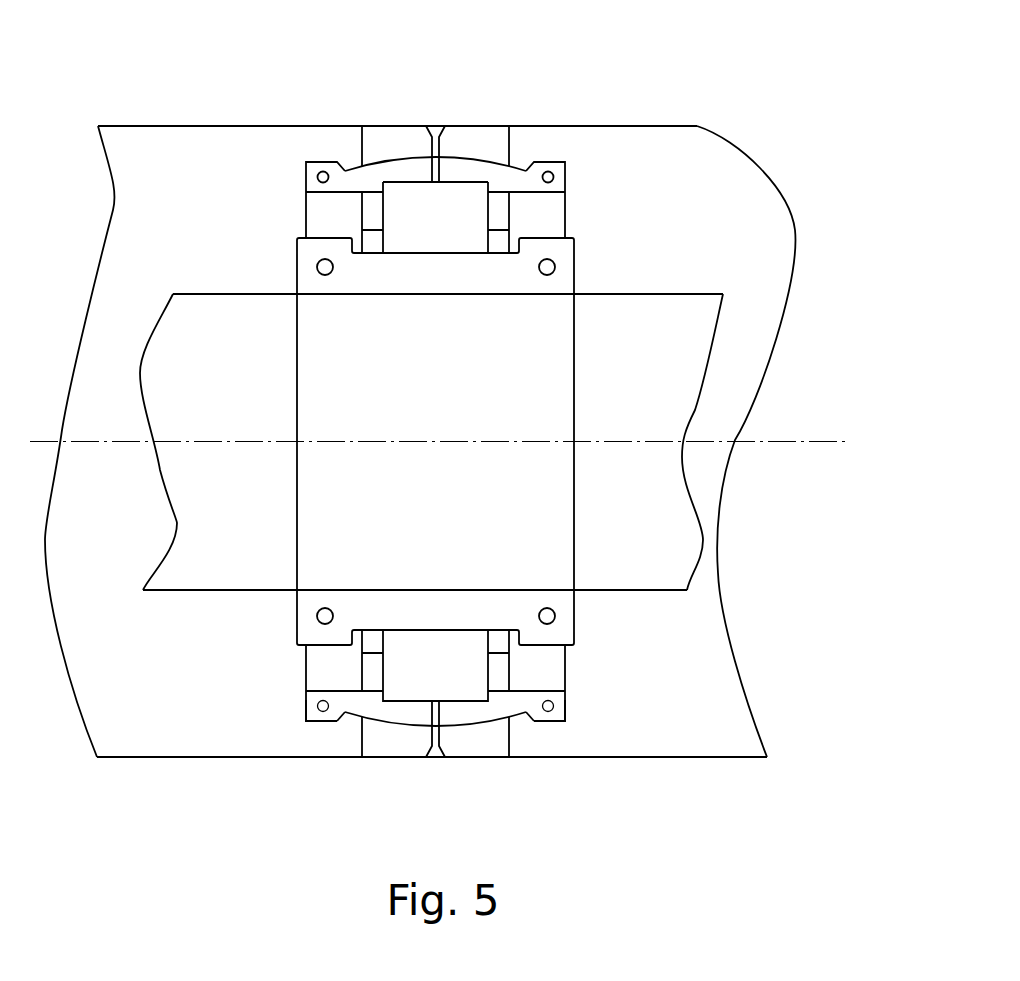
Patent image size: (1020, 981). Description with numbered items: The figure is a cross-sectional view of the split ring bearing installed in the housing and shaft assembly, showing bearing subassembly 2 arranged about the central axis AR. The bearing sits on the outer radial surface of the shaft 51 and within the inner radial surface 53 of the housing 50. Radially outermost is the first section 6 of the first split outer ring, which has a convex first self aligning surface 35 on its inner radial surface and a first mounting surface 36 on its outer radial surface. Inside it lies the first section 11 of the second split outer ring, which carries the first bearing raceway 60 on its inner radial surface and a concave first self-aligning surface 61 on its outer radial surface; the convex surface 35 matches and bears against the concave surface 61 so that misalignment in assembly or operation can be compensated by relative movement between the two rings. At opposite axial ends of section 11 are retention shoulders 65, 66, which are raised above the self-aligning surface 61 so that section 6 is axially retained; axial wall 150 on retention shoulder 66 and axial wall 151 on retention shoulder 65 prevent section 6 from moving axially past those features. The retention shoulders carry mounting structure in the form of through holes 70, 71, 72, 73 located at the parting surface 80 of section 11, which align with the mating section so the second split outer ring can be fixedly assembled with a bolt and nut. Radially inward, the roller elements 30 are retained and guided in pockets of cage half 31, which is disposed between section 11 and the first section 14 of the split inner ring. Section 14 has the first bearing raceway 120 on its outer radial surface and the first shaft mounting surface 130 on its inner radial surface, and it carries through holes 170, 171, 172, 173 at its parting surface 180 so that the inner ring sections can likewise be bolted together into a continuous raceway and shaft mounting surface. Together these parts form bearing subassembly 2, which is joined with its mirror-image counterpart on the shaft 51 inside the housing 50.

The bearing subassembly 2 is at (278, 242).
The first section of first split outer ring 6 is at (458, 134).
The first section of second split outer ring 11 is at (520, 173).
The first section of split inner ring 14 is at (560, 275).
The roller elements 30 is at (372, 212).
The split cage half 31 is at (500, 217).
The first self aligning surface 35 is at (392, 160).
The first mounting surface 36 is at (412, 140).
The housing 50 is at (712, 147).
The shaft 51 is at (707, 318).
The inner radial surface of housing 53 is at (765, 232).
The first bearing raceway 60 is at (462, 180).
The first self-aligning surface 61 is at (470, 728).
The retention shoulder 65 is at (557, 723).
The retention shoulder 66 is at (313, 723).
The through hole 70 is at (552, 173).
The through hole 71 is at (319, 174).
The through hole 72 is at (317, 706).
The through hole 73 is at (555, 706).
The parting surface 80 is at (348, 170).
The first bearing raceway 120 is at (300, 260).
The first shaft mounting surface 130 is at (327, 588).
The axial wall 150 is at (347, 712).
The axial wall 151 is at (525, 712).
The through hole 170 is at (325, 276).
The through hole 171 is at (548, 276).
The through hole 172 is at (318, 616).
The through hole 173 is at (555, 617).
The parting surface 180 is at (437, 268).
The central axis AR is at (788, 441).